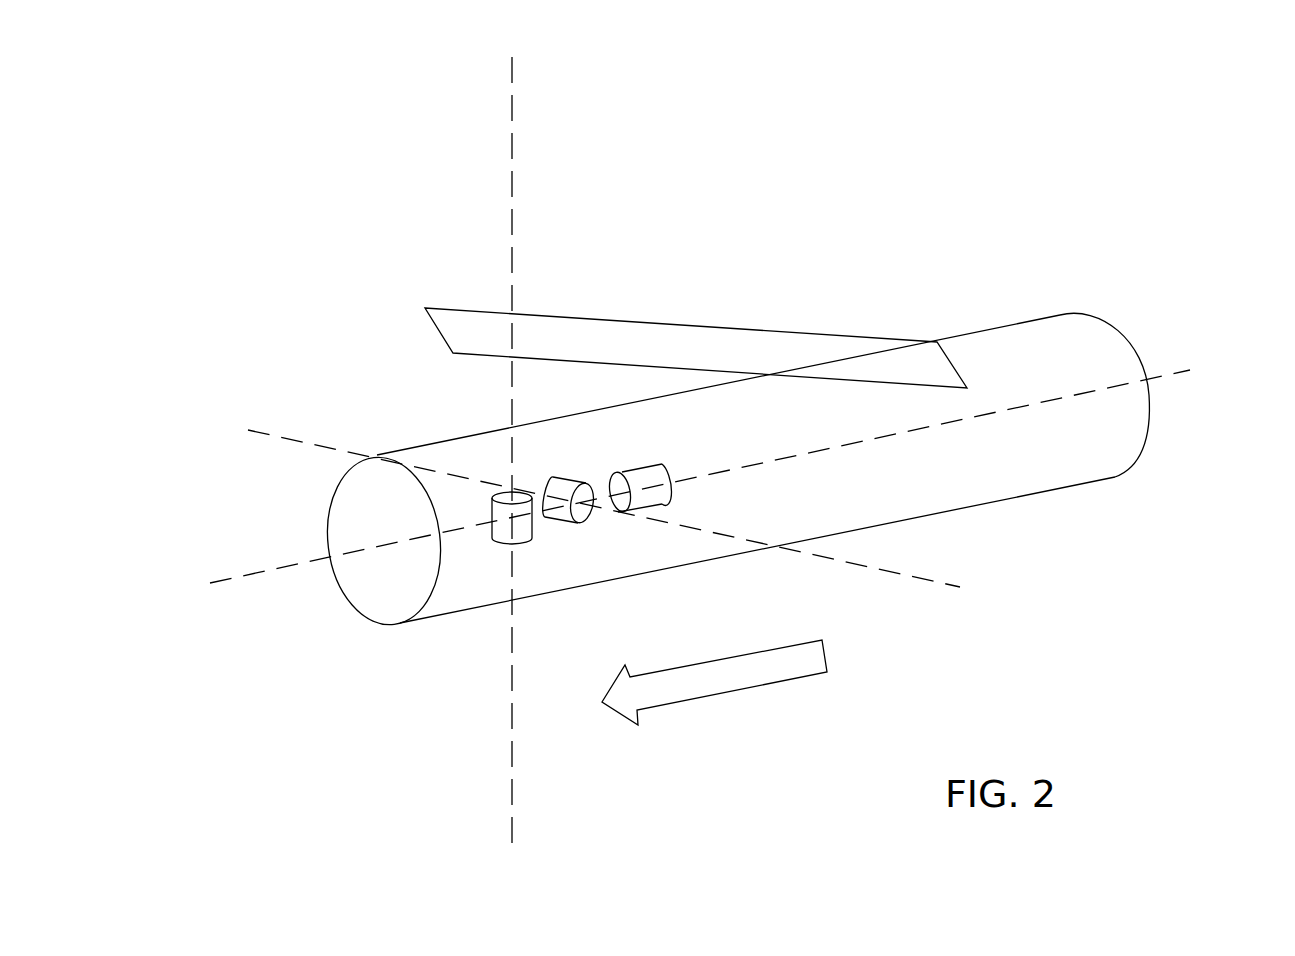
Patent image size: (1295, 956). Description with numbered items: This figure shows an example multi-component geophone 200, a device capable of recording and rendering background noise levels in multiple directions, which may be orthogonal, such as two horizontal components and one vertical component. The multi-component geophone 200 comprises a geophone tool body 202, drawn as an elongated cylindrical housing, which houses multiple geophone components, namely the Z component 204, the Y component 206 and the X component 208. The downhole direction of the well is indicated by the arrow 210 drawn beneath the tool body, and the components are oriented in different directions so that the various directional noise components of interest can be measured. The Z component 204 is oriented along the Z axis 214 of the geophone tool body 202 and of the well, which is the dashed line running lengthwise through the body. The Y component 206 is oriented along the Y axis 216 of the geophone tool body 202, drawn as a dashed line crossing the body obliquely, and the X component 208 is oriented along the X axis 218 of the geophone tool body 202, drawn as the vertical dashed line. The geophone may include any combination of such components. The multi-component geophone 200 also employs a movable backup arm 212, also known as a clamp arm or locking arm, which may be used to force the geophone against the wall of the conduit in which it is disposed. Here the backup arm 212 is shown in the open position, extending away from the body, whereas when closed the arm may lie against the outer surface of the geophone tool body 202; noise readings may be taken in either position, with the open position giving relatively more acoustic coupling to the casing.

The multi-component geophone 200 is at (1043, 120).
The geophone tool body 202 is at (1060, 315).
The Z component 204 is at (638, 466).
The Y component 206 is at (572, 480).
The X component 208 is at (490, 520).
The arrow 210 is at (697, 663).
The backup arm 212 is at (653, 318).
The Z axis 214 is at (1180, 372).
The Y axis 216 is at (917, 577).
The X axis 218 is at (512, 110).